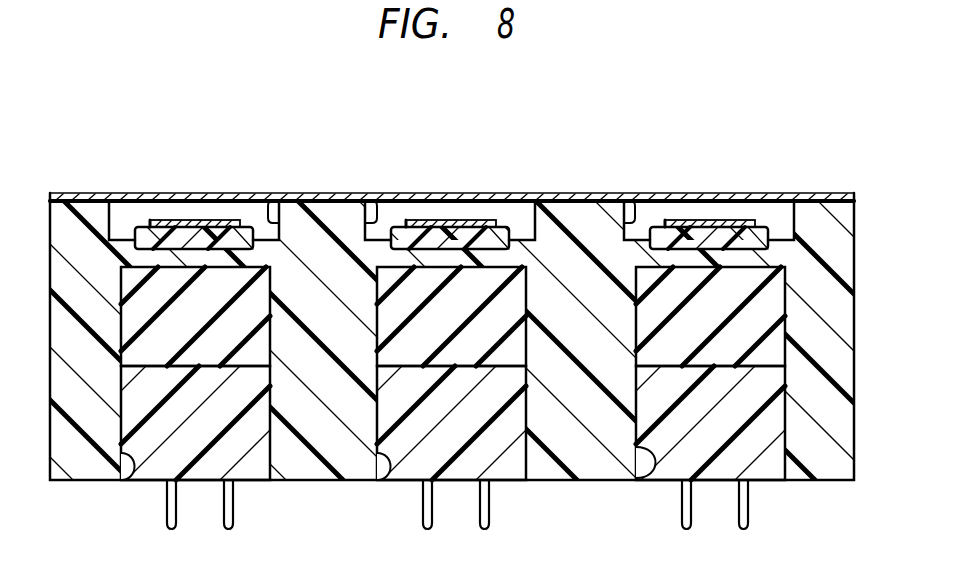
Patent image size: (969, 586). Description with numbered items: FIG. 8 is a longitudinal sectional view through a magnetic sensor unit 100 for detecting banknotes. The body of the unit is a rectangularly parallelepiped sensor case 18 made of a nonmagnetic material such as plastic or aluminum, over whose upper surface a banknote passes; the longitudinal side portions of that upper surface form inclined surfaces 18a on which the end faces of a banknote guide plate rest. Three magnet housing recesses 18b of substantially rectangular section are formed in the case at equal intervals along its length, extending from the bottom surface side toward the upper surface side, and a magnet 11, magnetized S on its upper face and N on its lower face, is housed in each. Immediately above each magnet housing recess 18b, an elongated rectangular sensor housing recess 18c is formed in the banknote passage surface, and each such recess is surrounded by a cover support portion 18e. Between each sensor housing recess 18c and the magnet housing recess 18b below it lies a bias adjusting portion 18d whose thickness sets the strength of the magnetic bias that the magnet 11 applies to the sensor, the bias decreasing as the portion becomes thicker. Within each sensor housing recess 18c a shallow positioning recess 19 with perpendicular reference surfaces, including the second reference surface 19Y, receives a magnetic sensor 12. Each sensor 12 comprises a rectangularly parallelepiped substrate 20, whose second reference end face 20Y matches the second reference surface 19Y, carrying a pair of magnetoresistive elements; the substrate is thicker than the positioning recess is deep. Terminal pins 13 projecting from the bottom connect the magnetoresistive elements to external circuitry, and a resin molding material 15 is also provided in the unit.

The detecting unit 100 is at (571, 183).
The magnet 11 is at (213, 338).
The magnetic sensor 12 is at (197, 228).
The terminal pin 13 is at (170, 528).
The resin molding material 15 is at (258, 448).
The sensor case 18 is at (75, 462).
The inclined surface 18a is at (642, 448).
The magnet housing recess 18b is at (130, 480).
The sensor housing recess 18c is at (273, 199).
The bias adjusting portion 18d is at (176, 262).
The cover support portion 18e is at (82, 194).
The positioning recess 19 is at (140, 236).
The second reference surface 19Y is at (225, 228).
The substrate 20 is at (172, 227).
The second reference end face 20Y is at (254, 229).